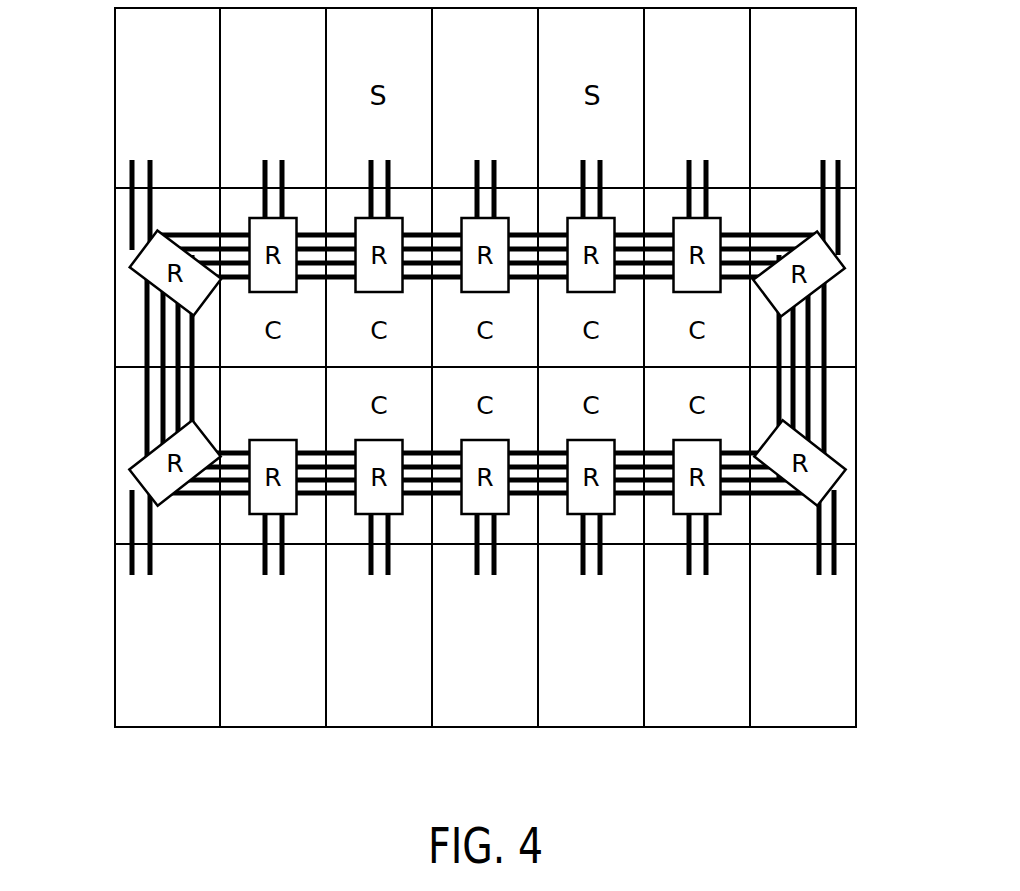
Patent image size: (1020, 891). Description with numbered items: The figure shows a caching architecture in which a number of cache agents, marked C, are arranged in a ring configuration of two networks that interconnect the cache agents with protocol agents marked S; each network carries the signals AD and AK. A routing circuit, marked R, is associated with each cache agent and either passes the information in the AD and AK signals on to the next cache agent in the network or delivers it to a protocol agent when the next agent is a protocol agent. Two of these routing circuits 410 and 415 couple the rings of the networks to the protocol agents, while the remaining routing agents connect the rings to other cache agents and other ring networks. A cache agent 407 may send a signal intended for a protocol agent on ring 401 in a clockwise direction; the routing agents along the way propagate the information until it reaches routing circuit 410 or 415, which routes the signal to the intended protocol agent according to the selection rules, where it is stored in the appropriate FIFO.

The ring 401 is at (217, 497).
The cache agent 407 is at (240, 408).
The routing circuit 410 is at (345, 232).
The routing circuit 415 is at (620, 232).